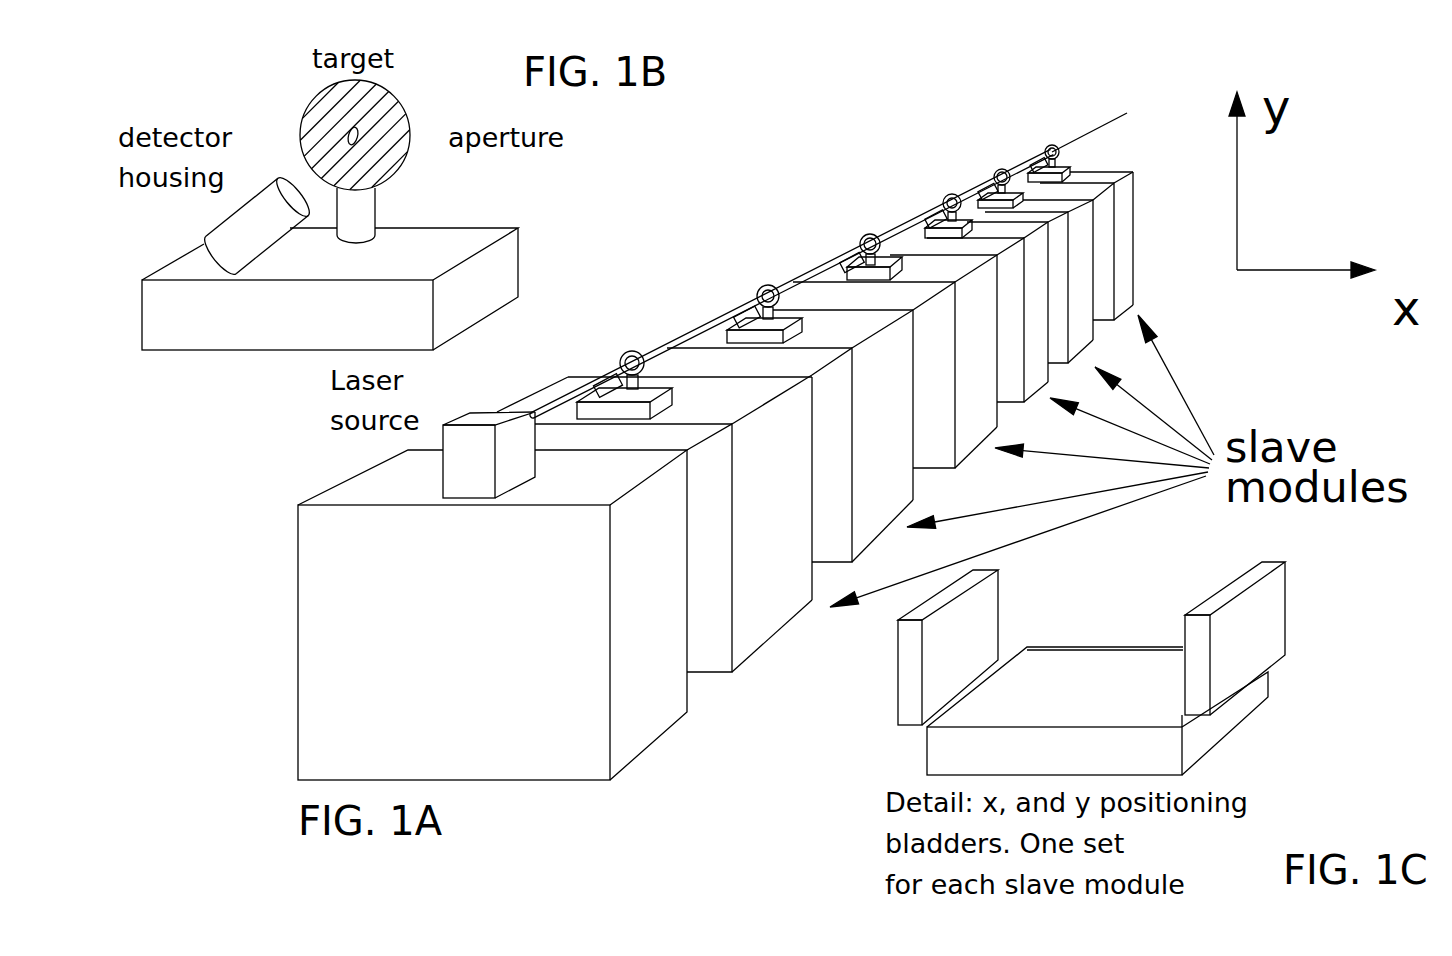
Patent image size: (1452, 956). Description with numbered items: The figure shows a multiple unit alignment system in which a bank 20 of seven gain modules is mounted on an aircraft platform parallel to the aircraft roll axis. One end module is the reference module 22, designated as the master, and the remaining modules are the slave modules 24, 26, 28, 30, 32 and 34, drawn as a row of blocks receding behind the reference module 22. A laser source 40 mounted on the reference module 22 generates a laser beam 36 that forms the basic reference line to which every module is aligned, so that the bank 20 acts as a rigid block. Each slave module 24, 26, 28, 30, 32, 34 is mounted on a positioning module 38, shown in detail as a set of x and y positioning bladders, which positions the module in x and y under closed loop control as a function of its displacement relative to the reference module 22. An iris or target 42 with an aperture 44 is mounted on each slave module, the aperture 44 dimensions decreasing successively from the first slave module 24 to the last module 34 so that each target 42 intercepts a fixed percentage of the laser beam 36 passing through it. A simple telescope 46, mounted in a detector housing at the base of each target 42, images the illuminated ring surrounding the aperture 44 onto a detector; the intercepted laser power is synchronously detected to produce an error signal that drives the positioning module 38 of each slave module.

In FIG. 1A, the bank 20 is at (893, 114).
In FIG. 1A, the reference module 22 is at (660, 738).
In FIG. 1A, the slave module 24 is at (790, 624).
In FIG. 1A, the slave module 26 is at (878, 545).
In FIG. 1A, the slave module 28 is at (973, 447).
In FIG. 1A, the slave module 30 is at (1035, 403).
In FIG. 1A, the slave module 32 is at (1093, 345).
In FIG. 1A, the slave module 34 is at (1137, 278).
In FIG. 1A, the laser beam 36 is at (1103, 125).
In FIG. 1C, the positioning module 38 is at (1237, 741).
In FIG. 1A, the laser source 40 is at (470, 413).
In FIG. 1A, the target 42 is at (628, 351).
In FIG. 1B, the target 42 is at (295, 97).
In FIG. 1B, the aperture 44 is at (365, 124).
In FIG. 1B, the telescope 46 is at (218, 223).